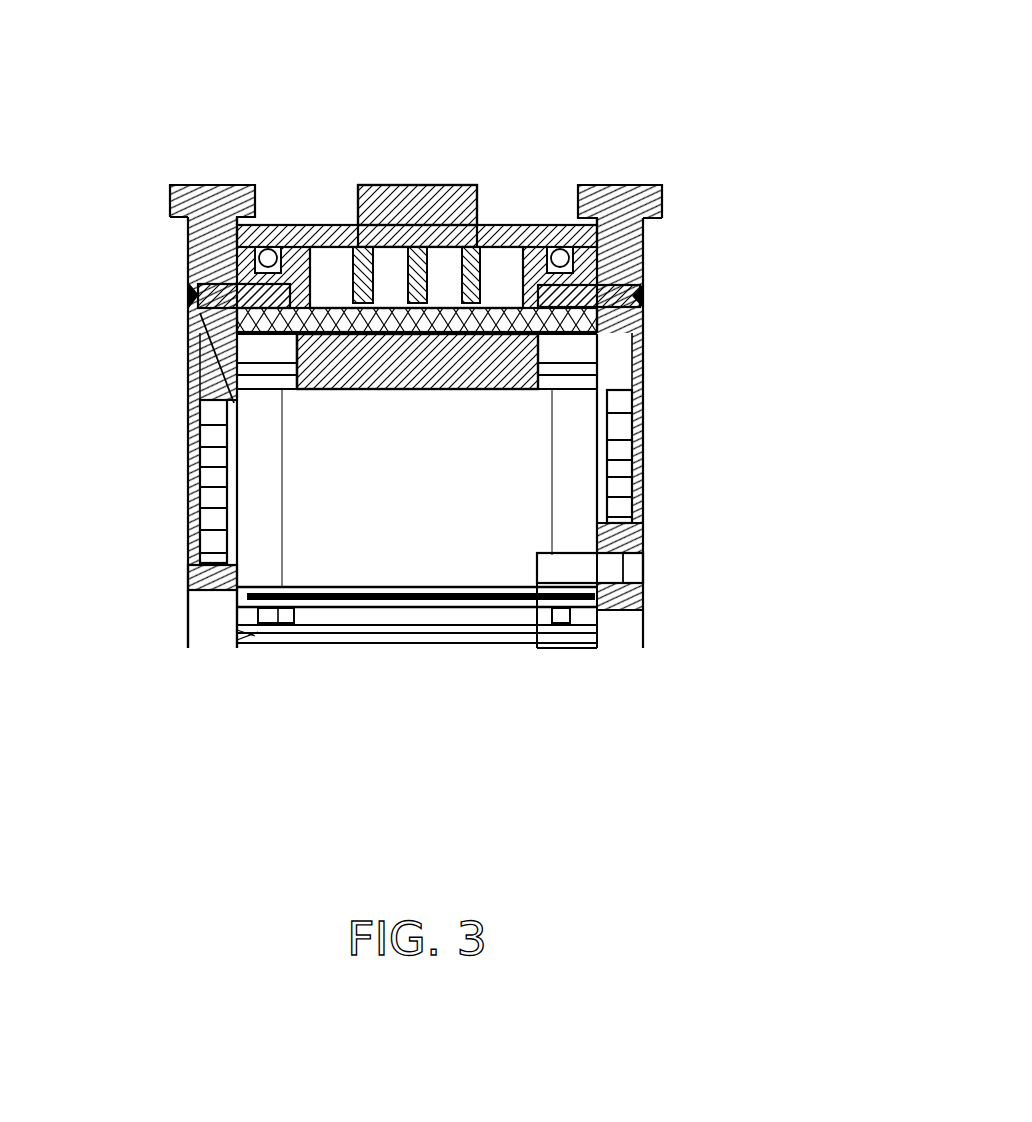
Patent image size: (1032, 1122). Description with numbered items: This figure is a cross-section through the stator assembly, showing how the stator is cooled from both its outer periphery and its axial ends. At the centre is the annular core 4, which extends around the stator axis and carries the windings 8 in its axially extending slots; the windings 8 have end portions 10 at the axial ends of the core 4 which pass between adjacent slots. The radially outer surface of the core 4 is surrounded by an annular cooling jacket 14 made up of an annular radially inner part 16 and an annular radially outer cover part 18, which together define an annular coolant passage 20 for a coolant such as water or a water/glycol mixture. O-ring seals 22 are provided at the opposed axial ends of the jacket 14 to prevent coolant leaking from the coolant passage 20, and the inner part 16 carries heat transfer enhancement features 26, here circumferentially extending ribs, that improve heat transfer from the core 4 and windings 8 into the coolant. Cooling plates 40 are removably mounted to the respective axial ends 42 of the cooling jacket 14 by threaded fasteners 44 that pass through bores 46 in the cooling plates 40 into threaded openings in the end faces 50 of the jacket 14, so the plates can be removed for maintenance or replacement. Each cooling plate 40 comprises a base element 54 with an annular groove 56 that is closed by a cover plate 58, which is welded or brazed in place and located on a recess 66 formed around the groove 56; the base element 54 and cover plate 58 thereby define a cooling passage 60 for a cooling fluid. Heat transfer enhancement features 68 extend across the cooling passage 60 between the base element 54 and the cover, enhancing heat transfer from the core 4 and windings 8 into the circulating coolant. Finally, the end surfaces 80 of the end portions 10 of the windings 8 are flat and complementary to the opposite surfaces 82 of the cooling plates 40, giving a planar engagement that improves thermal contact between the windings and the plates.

The annular core 4 is at (600, 333).
The windings 8 is at (407, 563).
The end portions 10 is at (333, 647).
The cooling jacket 14 is at (447, 107).
The radially inner part 16 is at (645, 262).
The radially outer cover part 18 is at (315, 225).
The coolant passage 20 is at (505, 267).
The O-ring seals 22 is at (268, 247).
The heat transfer enhancement features 26 is at (350, 247).
The cooling plates 40 is at (187, 405).
The axial ends 42 is at (185, 277).
The threaded fasteners 44 is at (185, 337).
The bores 46 is at (185, 385).
The end faces 50 is at (187, 236).
The base element 54 is at (215, 593).
The annular groove 56 is at (260, 640).
The cover plate 58 is at (188, 553).
The cooling passage 60 is at (317, 552).
The recess 66 is at (245, 390).
The heat transfer enhancement features 68 is at (238, 495).
The end surfaces 80 is at (190, 470).
The opposite surfaces 82 is at (645, 403).